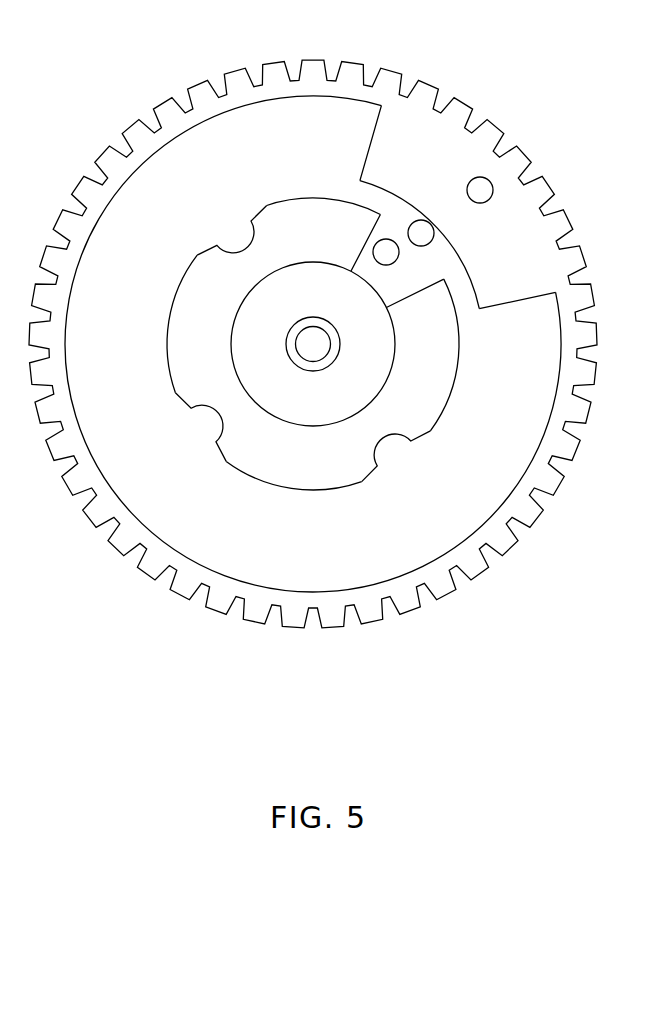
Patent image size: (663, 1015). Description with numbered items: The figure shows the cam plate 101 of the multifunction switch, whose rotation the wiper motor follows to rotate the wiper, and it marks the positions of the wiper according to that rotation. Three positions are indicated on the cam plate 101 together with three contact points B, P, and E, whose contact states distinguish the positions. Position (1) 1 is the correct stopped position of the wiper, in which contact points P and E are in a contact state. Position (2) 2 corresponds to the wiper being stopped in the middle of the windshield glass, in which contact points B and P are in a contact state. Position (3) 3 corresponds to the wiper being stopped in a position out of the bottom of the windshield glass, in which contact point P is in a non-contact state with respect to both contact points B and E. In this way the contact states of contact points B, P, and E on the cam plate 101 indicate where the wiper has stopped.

The cam plate 101 is at (282, 132).
The wiper position 1 is at (397, 261).
The wiper position 2 is at (313, 344).
The wiper position 3 is at (449, 220).
The contact point B is at (480, 190).
The contact point P is at (421, 233).
The contact point E is at (386, 252).